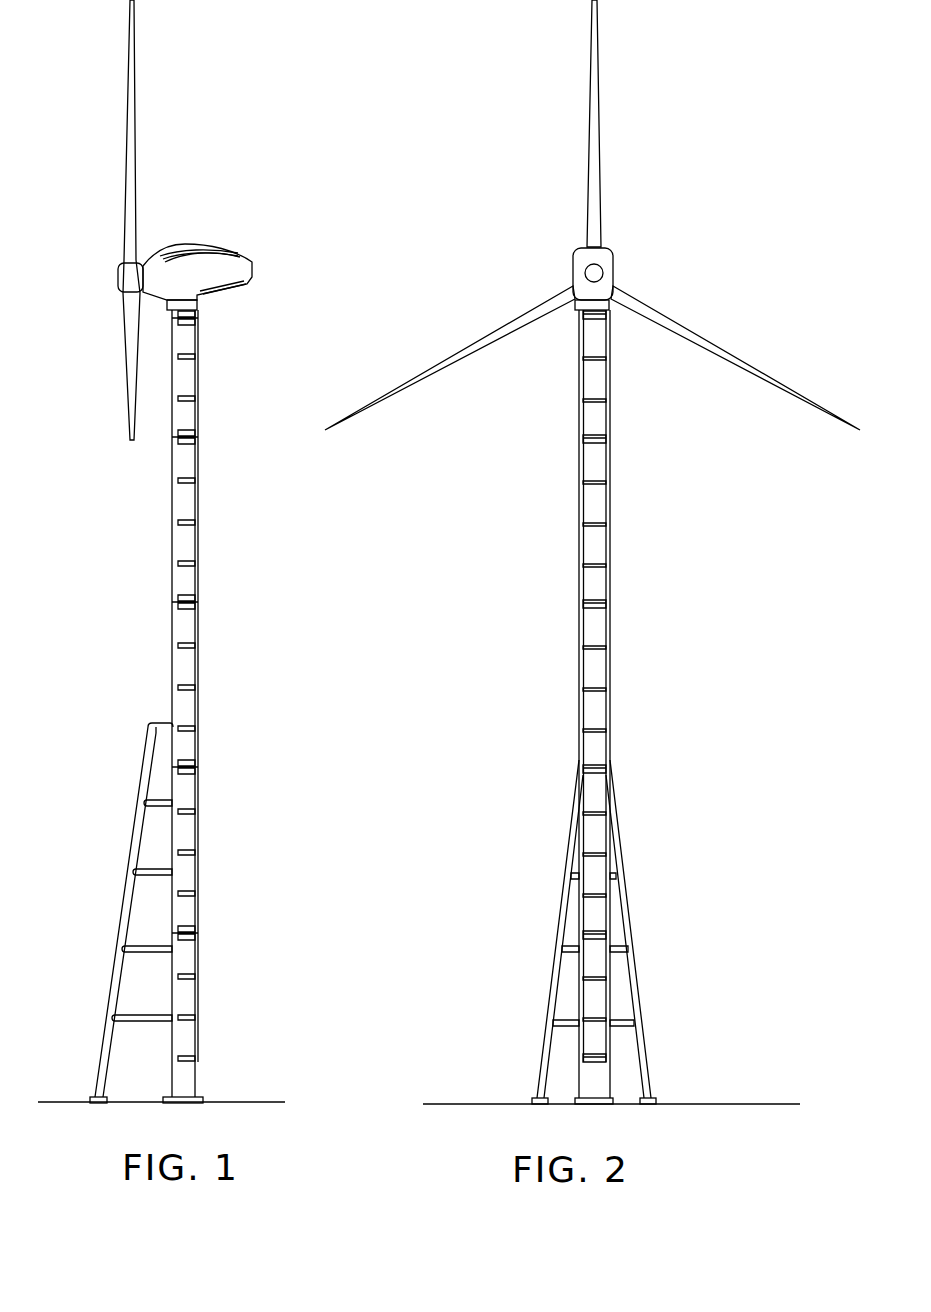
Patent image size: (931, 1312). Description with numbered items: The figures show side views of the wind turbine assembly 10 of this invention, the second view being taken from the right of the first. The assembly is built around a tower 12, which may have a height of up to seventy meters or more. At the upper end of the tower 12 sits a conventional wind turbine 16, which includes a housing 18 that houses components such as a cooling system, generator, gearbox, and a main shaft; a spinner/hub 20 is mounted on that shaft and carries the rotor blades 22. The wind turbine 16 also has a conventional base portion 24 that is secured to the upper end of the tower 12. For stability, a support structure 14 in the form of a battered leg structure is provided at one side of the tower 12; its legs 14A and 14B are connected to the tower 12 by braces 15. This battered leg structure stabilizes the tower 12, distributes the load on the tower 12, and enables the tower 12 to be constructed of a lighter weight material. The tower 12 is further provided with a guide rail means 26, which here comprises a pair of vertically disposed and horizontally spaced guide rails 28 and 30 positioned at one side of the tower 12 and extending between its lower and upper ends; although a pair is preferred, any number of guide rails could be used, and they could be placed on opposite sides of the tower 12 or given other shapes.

In FIG. 1, the wind turbine assembly 10 is at (322, 332).
In FIG. 1, the tower 12 is at (198, 797).
In FIG. 1, the support structure 14 is at (115, 878).
In FIG. 2, the support structure 14 is at (601, 932).
In FIG. 2, the leg 14A is at (557, 940).
In FIG. 2, the leg 14B is at (642, 962).
In FIG. 1, the braces 15 is at (147, 945).
In FIG. 2, the braces 15 is at (620, 1023).
In FIG. 1, the wind turbine 16 is at (202, 238).
In FIG. 1, the housing 18 is at (222, 268).
In FIG. 1, the spinner/hub 20 is at (118, 282).
In FIG. 1, the rotor blades 22 is at (130, 343).
In FIG. 1, the base portion 24 is at (200, 305).
In FIG. 2, the guide rail means 26 is at (611, 702).
In FIG. 2, the guide rail 28 is at (578, 578).
In FIG. 2, the guide rail 30 is at (608, 547).